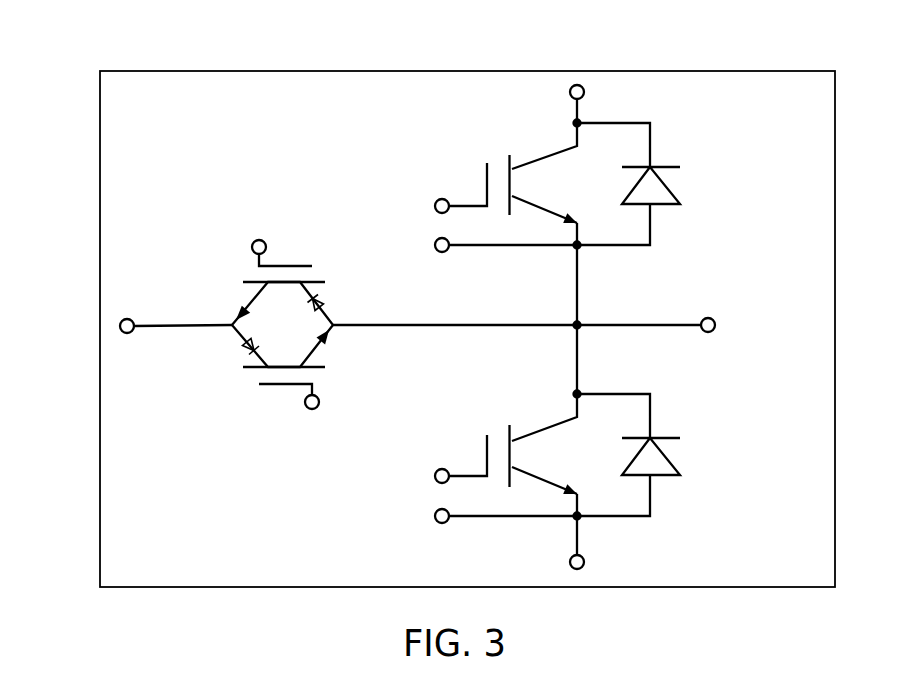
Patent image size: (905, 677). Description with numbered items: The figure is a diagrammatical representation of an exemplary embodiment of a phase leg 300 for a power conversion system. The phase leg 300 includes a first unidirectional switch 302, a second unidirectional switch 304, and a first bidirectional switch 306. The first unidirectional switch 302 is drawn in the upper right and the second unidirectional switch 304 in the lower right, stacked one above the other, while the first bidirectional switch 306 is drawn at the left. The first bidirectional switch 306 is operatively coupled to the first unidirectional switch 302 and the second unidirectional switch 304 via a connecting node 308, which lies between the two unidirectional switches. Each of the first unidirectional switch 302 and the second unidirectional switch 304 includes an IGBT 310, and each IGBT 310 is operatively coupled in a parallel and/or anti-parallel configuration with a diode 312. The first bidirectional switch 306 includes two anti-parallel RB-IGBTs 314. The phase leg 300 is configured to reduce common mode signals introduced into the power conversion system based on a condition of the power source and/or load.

The phase leg 300 is at (150, 47).
The first unidirectional switch 302 is at (443, 143).
The second unidirectional switch 304 is at (450, 406).
The first bidirectional switch 306 is at (261, 291).
The connecting node 308 is at (580, 320).
The IGBT 310 is at (551, 151).
The diode 312 is at (682, 458).
The RB-IGBTs 314 is at (313, 340).